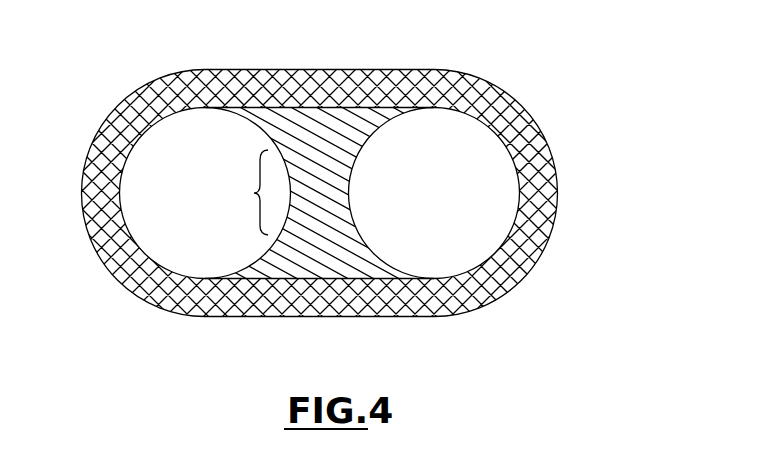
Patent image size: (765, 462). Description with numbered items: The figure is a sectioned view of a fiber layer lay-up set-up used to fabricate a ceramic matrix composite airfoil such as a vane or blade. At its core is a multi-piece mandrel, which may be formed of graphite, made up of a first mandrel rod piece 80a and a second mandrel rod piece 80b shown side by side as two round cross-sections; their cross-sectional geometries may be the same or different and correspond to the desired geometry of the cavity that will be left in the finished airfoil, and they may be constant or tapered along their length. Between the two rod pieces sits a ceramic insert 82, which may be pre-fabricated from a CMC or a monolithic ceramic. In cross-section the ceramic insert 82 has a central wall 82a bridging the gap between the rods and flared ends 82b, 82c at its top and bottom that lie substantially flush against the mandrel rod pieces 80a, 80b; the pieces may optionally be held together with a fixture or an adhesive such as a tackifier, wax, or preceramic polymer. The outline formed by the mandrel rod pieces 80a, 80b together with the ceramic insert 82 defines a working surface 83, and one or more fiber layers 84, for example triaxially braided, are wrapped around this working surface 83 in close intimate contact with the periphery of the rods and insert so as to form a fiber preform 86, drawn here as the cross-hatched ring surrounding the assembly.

The first mandrel rod piece 80a is at (213, 142).
The second mandrel rod piece 80b is at (500, 168).
The ceramic insert 82 is at (348, 181).
The central wall 82a is at (254, 193).
The flared end 82b is at (372, 123).
The flared end 82c is at (280, 255).
The working surface 83 is at (152, 118).
The fiber layer 84 is at (560, 178).
The fiber preform 86 is at (110, 270).